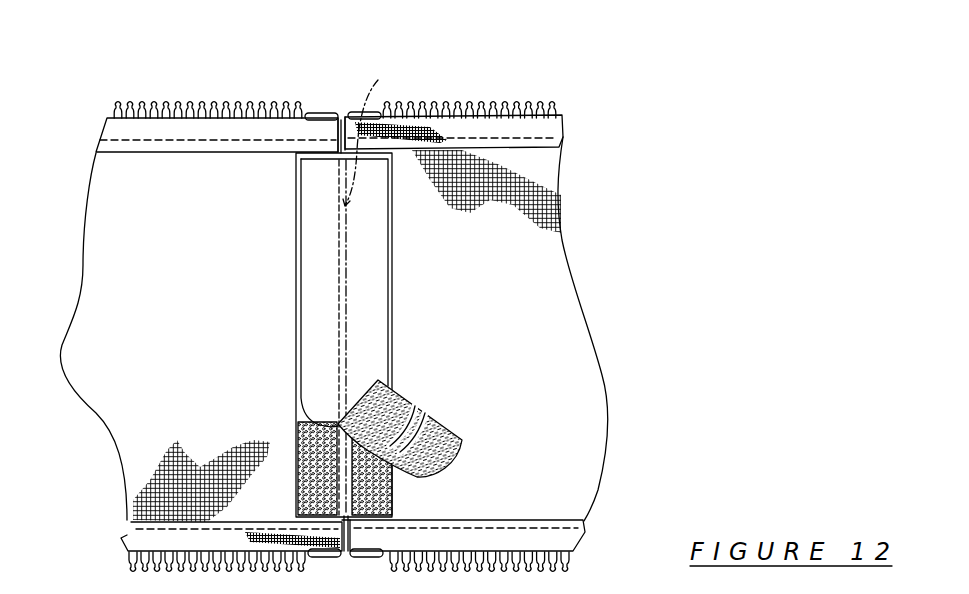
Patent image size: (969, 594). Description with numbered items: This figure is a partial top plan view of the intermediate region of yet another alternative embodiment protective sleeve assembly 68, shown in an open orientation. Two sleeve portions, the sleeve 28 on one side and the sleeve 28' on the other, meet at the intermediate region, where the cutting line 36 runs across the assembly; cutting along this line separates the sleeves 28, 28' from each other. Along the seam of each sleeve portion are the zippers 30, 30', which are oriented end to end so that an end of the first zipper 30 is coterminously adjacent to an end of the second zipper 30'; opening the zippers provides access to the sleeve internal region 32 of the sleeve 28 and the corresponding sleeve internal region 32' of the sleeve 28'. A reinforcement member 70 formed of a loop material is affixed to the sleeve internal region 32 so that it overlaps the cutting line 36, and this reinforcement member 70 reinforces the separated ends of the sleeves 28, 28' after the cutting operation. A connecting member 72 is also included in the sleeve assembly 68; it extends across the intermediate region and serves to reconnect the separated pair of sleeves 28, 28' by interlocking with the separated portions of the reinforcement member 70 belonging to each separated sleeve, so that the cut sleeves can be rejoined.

The protective sleeve assembly 68 is at (322, 66).
The sleeve 28' is at (151, 330).
The sleeve 28 is at (518, 329).
The zipper 30' is at (217, 104).
The zipper 30 is at (454, 102).
The sleeve internal region 32' is at (186, 482).
The sleeve internal region 32 is at (524, 479).
The connecting member 72 is at (355, 268).
The cutting line 36 is at (379, 136).
The reinforcement member 70 is at (390, 493).